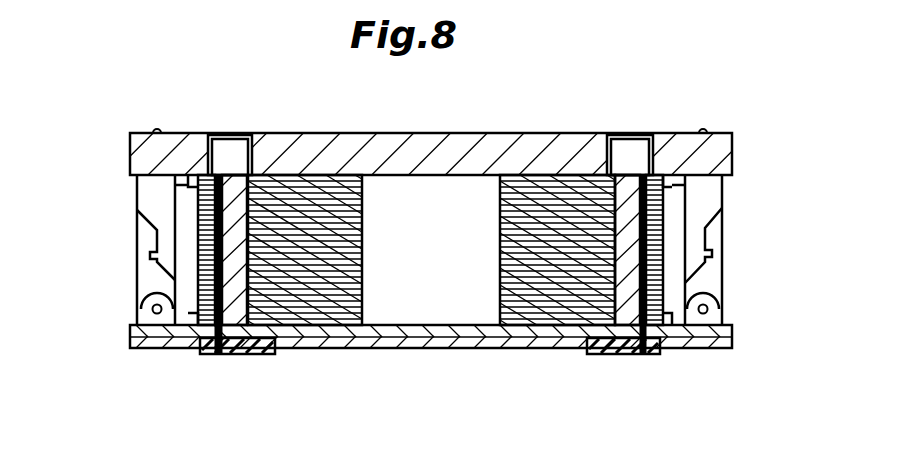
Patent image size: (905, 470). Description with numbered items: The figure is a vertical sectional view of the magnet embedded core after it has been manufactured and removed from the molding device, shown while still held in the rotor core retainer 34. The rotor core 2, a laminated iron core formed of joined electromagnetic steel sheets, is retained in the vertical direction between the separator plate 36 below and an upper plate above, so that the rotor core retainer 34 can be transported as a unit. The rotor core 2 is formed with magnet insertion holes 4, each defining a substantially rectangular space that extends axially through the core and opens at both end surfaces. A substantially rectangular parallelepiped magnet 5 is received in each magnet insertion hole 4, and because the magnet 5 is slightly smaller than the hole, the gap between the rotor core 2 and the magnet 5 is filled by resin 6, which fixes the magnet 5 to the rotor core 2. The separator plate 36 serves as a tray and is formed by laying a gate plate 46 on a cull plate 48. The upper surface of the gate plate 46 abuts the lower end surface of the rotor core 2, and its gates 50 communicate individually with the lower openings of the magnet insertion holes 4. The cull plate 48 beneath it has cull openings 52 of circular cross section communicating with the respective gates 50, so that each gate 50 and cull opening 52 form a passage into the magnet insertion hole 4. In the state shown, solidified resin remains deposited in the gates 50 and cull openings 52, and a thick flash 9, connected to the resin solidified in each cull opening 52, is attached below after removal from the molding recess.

The rotor core 2 is at (688, 242).
The magnet insertion hole 4 is at (200, 222).
The magnet 5 is at (240, 228).
The resin 6 is at (200, 265).
The thick flash 9 is at (270, 357).
The rotor core retainer 34 is at (126, 226).
The separator plate 36 is at (712, 152).
The gate plate 46 is at (411, 341).
The cull plate 48 is at (490, 343).
The gate 50 is at (222, 357).
The cull opening 52 is at (253, 357).